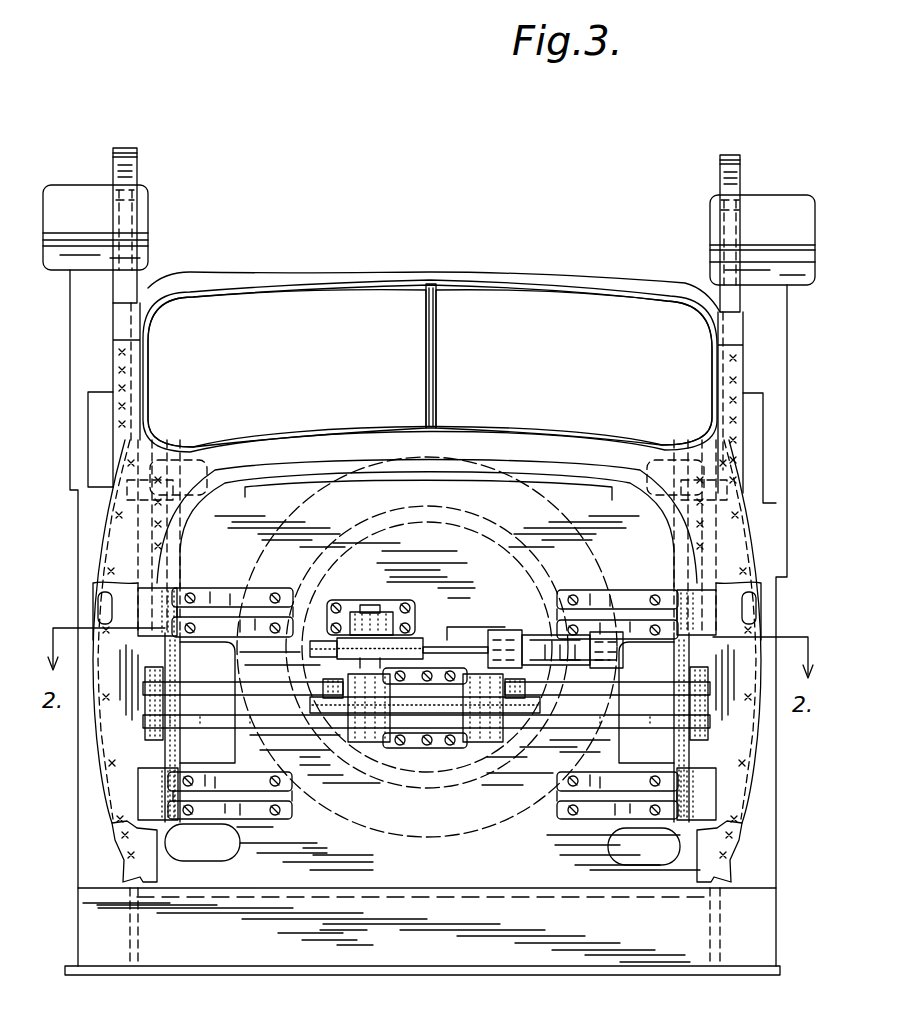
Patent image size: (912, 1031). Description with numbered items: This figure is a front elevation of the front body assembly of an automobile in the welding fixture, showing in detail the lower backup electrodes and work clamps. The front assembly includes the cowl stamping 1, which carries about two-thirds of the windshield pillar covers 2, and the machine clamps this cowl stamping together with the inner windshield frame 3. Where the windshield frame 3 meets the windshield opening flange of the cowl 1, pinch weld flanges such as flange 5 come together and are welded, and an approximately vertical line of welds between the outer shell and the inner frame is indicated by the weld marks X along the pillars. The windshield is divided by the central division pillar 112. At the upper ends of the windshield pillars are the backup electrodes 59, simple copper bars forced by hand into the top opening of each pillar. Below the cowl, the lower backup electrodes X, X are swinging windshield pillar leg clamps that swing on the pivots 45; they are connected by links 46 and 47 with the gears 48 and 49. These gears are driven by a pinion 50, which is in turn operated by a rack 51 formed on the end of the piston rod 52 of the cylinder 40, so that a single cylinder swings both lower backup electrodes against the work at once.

The cowl stamping 1 is at (222, 452).
The windshield pillar covers 2 is at (148, 358).
The inner windshield frame 3 is at (207, 285).
The pinch weld flange 5 is at (272, 432).
The division pillar 112 is at (437, 343).
The backup electrodes 59 is at (125, 176).
The cylinder 40 is at (527, 632).
The pivots 45 is at (165, 587).
The link 46 is at (205, 716).
The link 47 is at (640, 716).
The gear 48 is at (373, 745).
The gear 49 is at (473, 742).
The pinion 50 is at (385, 646).
The rack 51 is at (420, 640).
The piston rod 52 is at (465, 648).
The backup electrodes X is at (100, 725).